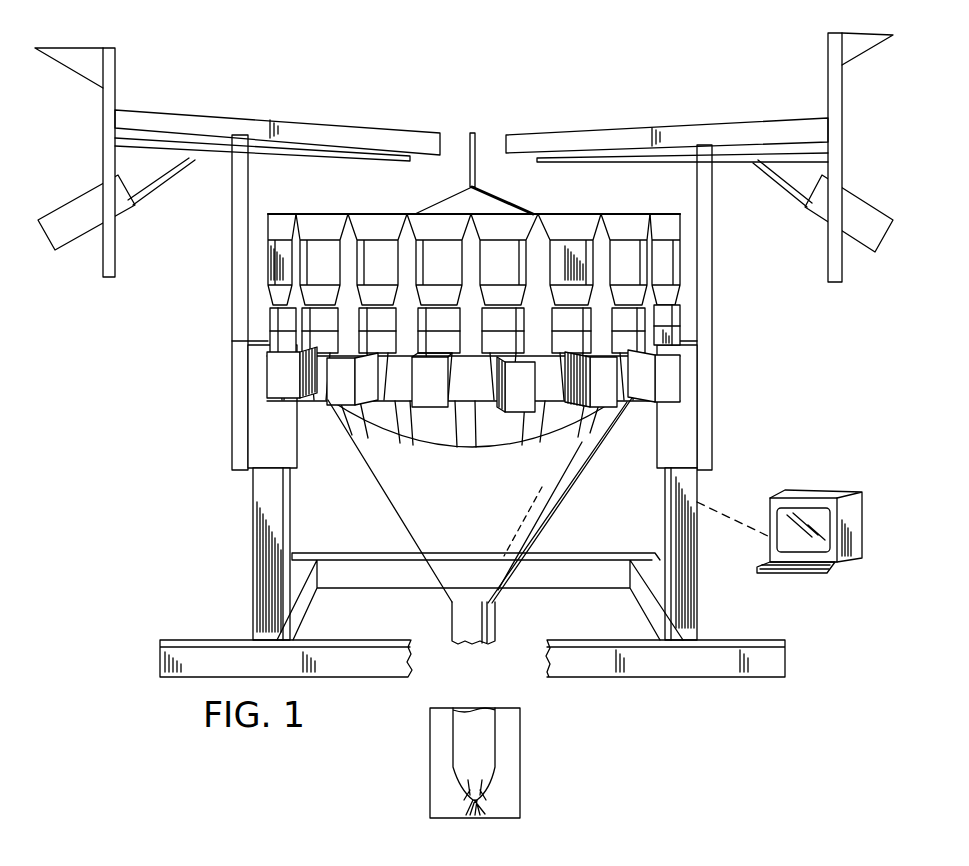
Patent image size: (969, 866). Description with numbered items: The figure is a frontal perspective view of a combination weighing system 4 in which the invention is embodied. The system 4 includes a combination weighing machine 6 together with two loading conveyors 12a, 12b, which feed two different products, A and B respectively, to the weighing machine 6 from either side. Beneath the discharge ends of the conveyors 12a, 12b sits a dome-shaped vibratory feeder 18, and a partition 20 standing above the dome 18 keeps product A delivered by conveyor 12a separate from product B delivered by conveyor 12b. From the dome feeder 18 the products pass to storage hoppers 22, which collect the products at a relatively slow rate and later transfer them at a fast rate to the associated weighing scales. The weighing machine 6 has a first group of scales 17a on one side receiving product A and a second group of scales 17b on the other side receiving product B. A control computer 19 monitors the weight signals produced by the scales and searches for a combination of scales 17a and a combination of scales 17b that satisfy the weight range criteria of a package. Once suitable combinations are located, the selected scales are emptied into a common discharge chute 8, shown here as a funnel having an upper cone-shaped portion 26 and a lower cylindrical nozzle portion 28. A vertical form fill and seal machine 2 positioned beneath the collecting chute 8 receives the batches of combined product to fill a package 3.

The vertical form fill and seal machine 2 is at (520, 746).
The package 3 is at (452, 743).
The combination weighing system 4 is at (826, 370).
The combination weighing machine 6 is at (684, 321).
The common discharge chute 8 is at (551, 522).
The loading conveyor 12a is at (288, 126).
The loading conveyor 12b is at (587, 128).
The first group of scales 17a is at (432, 340).
The second group of scales 17b is at (572, 342).
The dome-shaped vibratory feeder 18 is at (508, 201).
The control computer 19 is at (820, 497).
The partition 20 is at (477, 152).
The storage hoppers 22 is at (371, 228).
The upper cone-shaped portion 26 is at (577, 478).
The lower cylindrical nozzle portion 28 is at (497, 618).